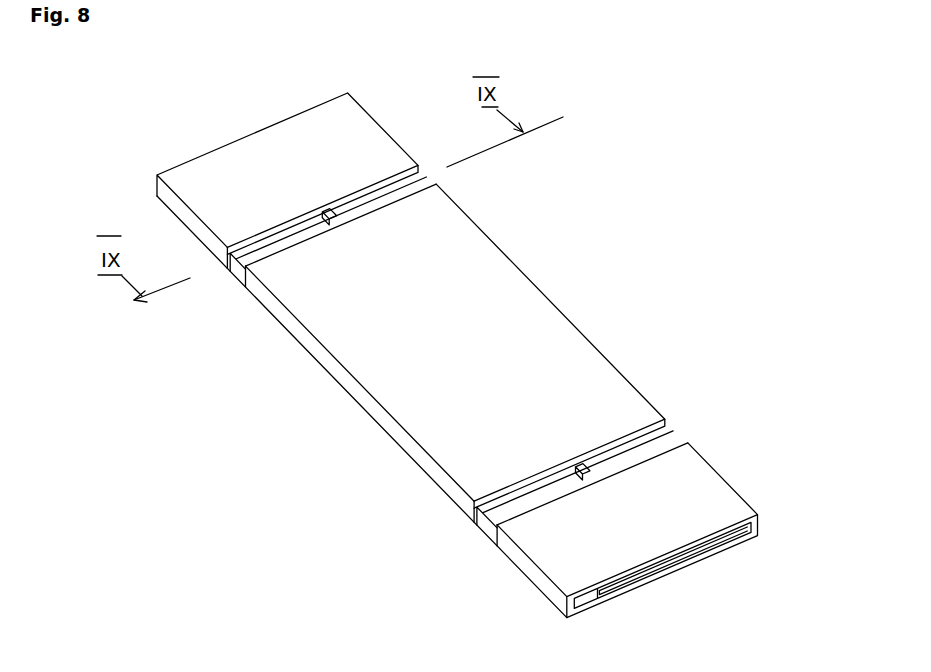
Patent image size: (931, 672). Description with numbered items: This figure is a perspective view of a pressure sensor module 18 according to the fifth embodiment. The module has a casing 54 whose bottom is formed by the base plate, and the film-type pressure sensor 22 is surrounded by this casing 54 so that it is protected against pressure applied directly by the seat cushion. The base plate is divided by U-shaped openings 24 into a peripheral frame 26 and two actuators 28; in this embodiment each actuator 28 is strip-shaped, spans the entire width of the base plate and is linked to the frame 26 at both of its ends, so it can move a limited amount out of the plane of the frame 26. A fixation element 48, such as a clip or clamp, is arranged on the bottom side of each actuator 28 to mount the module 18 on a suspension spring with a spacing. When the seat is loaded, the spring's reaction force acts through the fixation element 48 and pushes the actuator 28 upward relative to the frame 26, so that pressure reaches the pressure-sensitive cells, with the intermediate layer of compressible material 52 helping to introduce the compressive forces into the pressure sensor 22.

The pressure sensor module 18 is at (634, 327).
The film-type pressure sensor 22 is at (746, 541).
The U-shaped opening 24 is at (243, 243).
The frame portion 26 is at (344, 113).
The actuator 28 is at (391, 188).
The fixation element 48 is at (344, 205).
The intermediate layer of compressible material 52 is at (757, 531).
The casing 54 is at (344, 394).